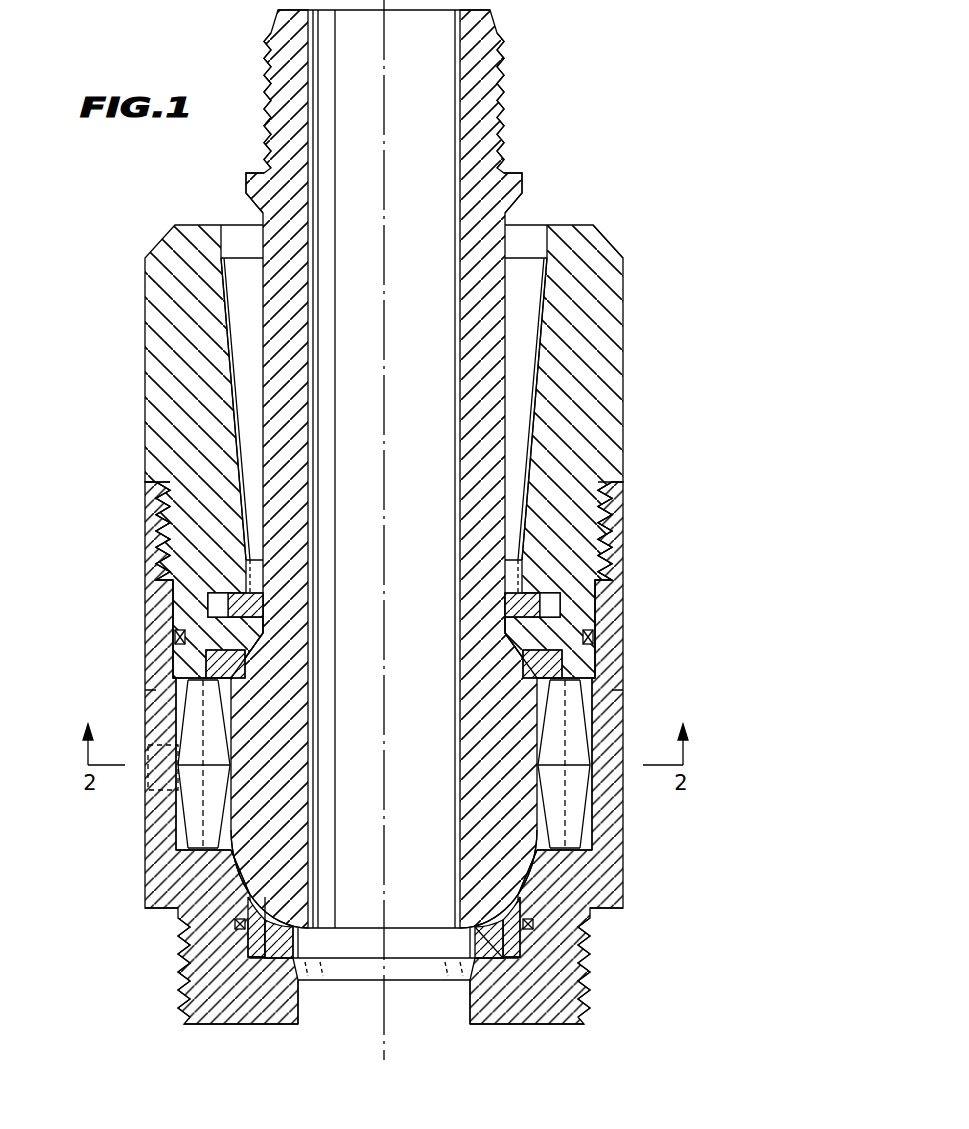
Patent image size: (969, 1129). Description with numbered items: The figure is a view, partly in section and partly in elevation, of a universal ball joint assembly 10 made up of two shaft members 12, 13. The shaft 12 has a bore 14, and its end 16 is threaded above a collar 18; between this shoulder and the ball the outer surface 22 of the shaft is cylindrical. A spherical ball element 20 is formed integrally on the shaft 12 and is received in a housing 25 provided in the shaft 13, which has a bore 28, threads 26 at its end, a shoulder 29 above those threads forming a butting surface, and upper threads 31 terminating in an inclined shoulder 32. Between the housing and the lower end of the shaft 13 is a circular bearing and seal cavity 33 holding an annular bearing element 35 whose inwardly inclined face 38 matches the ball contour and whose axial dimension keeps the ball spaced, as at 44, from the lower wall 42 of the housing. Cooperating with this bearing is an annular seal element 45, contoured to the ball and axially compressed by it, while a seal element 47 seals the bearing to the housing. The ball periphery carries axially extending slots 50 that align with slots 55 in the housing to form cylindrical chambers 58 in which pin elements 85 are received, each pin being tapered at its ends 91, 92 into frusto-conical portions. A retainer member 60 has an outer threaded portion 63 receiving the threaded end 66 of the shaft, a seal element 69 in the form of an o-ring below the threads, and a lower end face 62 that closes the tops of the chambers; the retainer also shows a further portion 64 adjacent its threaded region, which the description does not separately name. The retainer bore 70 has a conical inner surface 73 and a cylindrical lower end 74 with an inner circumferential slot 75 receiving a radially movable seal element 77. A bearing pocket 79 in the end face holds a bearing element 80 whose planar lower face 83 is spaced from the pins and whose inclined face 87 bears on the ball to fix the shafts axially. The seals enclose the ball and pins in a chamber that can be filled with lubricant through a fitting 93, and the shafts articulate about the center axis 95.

The universal ball joint assembly 10 is at (628, 245).
The shaft member 12 is at (503, 135).
The shaft member 13 is at (558, 975).
The bore 14 is at (458, 100).
The end of the shaft 16 is at (490, 30).
The collar 18 is at (524, 186).
The spherical ball element 20 is at (487, 697).
The outer surface 22 is at (512, 336).
The housing 25 is at (592, 634).
The threads 26 is at (586, 1013).
The bore 28 is at (326, 1008).
The shoulder 29 is at (601, 909).
The threads 31 is at (611, 522).
The inclined shoulder 32 is at (603, 570).
The bearing and seal cavity 33 is at (262, 960).
The bearing element 35 is at (510, 962).
The upper inwardly inclined face 38 is at (270, 885).
The lower wall 42 is at (548, 880).
The space 44 is at (512, 885).
The annular seal element 45 is at (300, 936).
The seal element 47 is at (232, 926).
The axially extending slots 50 is at (226, 725).
The axially extending slots 55 is at (595, 719).
The cylindrical chambers 58 is at (605, 690).
The retainer member 60 is at (600, 395).
The lower end face 62 is at (230, 668).
The outer threaded portion 63 is at (605, 462).
The nut face 64 is at (572, 504).
The threaded end 66 is at (162, 489).
The seal element 69 is at (176, 630).
The bore 70 is at (518, 372).
The conical inner surface 73 is at (557, 273).
The lower end 74 is at (266, 573).
The inner circumferential slot 75 is at (222, 604).
The seal element 77 is at (262, 606).
The inner circumferential bearing pocket 79 is at (240, 652).
The bearing element 80 is at (242, 672).
The planar lower face 83 is at (516, 671).
The pin elements 85 is at (577, 749).
The inclined face 87 is at (507, 650).
The tapered end 91 is at (573, 706).
The tapered end 92 is at (600, 815).
The fitting 93 is at (150, 790).
The center axis 95 is at (386, 256).